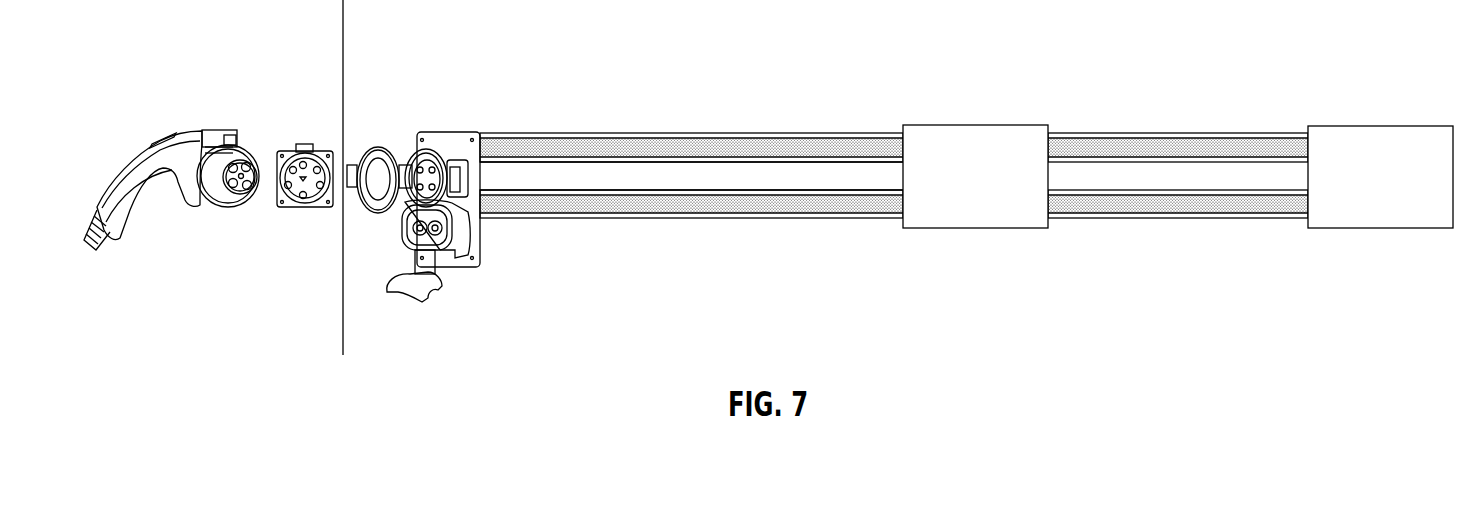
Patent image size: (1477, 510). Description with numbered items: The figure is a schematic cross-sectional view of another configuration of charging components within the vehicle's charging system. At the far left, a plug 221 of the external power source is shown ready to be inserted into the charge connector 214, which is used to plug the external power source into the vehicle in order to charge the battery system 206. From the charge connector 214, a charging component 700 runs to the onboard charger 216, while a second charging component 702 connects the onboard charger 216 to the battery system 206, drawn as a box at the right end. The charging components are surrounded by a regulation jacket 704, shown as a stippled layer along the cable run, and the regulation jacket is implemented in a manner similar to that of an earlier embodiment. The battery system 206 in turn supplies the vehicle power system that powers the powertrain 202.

The plug 221 is at (234, 113).
The charge connector 214 is at (422, 114).
The powertrain 202 is at (534, 135).
The charging component 700 is at (796, 164).
The charging component 702 is at (1144, 168).
The regulation jacket 704 is at (658, 214).
The onboard charger 216 is at (976, 125).
The battery system 206 is at (1380, 126).